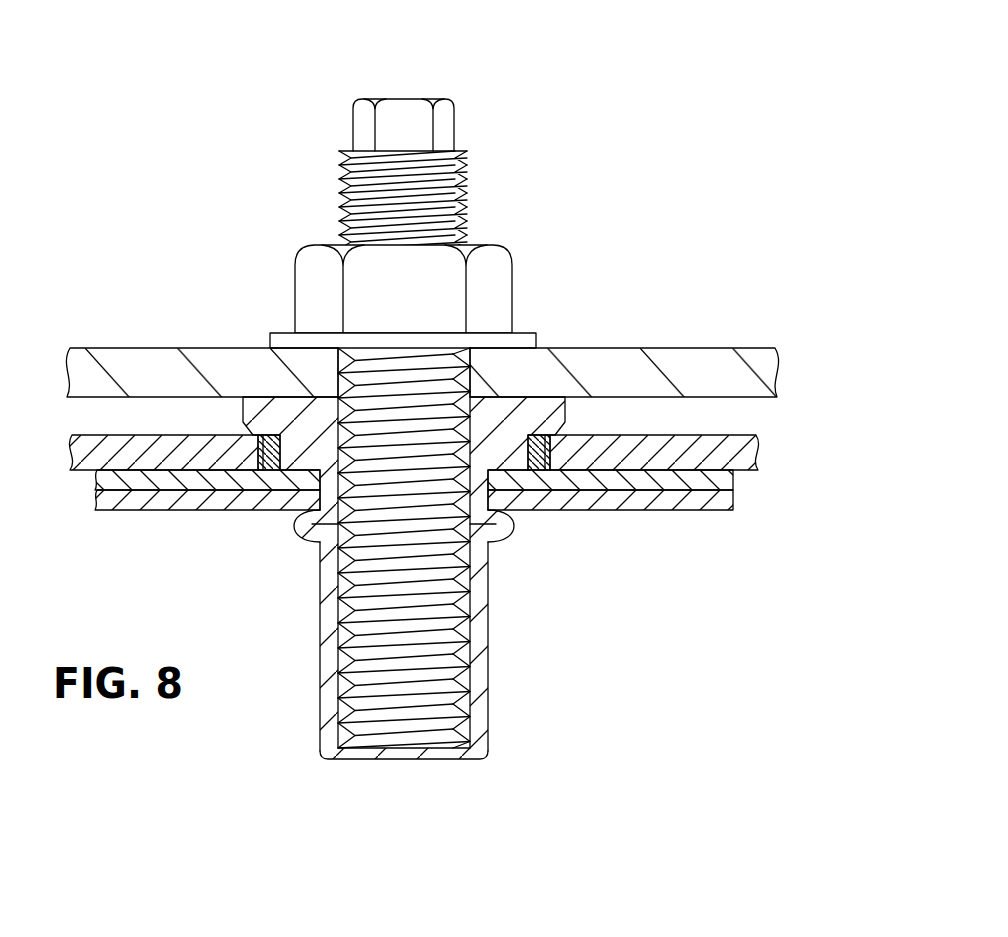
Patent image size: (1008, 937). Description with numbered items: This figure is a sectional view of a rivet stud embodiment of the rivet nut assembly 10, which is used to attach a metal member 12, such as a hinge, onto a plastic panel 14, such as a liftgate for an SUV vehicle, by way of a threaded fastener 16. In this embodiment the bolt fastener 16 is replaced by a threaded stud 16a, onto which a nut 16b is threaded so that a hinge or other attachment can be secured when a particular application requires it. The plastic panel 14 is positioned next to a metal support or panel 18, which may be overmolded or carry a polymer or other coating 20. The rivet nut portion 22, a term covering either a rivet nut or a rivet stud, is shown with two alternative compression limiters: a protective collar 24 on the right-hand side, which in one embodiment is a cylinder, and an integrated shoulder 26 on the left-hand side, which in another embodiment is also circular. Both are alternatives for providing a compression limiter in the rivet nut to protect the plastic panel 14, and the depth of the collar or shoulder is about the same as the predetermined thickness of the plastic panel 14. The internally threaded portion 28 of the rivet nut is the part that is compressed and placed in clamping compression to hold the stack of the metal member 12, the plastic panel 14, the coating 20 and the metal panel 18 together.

The rivet nut assembly 10 is at (258, 194).
The metal member 12 is at (777, 348).
The plastic panel 14 is at (745, 450).
The threaded fastener 16 is at (697, 656).
The threaded stud 16a is at (406, 118).
The nut 16b is at (496, 268).
The metal support or panel 18 is at (722, 500).
The coating 20 is at (727, 482).
The rivet nut portion 22 is at (472, 760).
The protective collar 24 is at (537, 436).
The integrated shoulder 26 is at (273, 455).
The internally threaded portion 28 is at (296, 531).